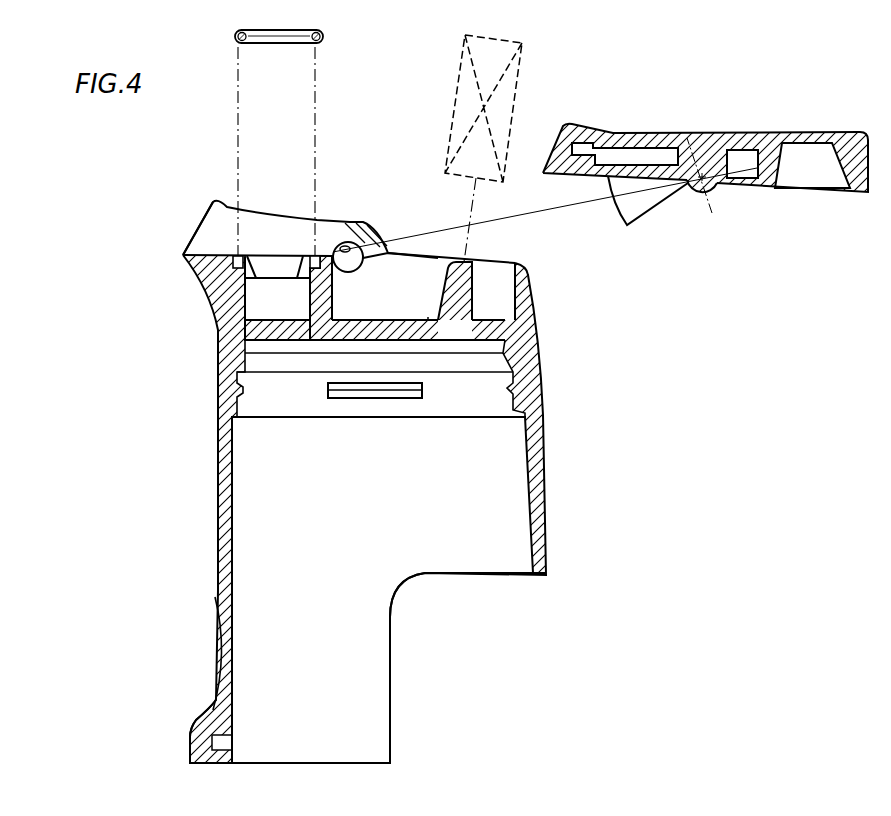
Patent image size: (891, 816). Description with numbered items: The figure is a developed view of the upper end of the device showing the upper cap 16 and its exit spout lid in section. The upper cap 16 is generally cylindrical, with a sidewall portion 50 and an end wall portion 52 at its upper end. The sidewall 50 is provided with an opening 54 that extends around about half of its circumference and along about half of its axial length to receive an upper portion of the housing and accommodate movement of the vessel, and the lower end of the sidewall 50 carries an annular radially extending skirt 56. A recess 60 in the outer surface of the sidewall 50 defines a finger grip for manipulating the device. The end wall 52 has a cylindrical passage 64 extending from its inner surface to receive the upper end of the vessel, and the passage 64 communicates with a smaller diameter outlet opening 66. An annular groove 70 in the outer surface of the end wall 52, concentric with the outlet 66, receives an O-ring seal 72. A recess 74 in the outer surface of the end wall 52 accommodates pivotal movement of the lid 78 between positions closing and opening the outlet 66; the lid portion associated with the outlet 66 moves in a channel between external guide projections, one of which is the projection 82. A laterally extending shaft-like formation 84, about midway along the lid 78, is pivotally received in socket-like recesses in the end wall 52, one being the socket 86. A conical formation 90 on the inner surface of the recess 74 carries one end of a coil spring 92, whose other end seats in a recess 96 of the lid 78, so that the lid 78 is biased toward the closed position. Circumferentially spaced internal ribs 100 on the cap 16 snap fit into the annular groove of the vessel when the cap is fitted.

The upper cap 16 is at (640, 412).
The sidewall portion 50 is at (215, 541).
The end wall portion 52 is at (203, 283).
The opening 54 is at (465, 580).
The annular radially extending skirt 56 is at (187, 742).
The recess 60 is at (222, 652).
The cylindrical passage 64 is at (270, 282).
The outlet opening 66 is at (297, 258).
The annular groove 70 is at (227, 240).
The O-ring seal 72 is at (323, 42).
The recess 74 is at (371, 318).
The lid 78 is at (720, 133).
The external guide projection 82 is at (212, 225).
The shaft-like formation 84 is at (715, 188).
The socket-like recess 86 is at (350, 243).
The conical formation 90 is at (452, 289).
The coil spring 92 is at (520, 100).
The recess 96 is at (834, 176).
The internal ribs 100 is at (512, 386).